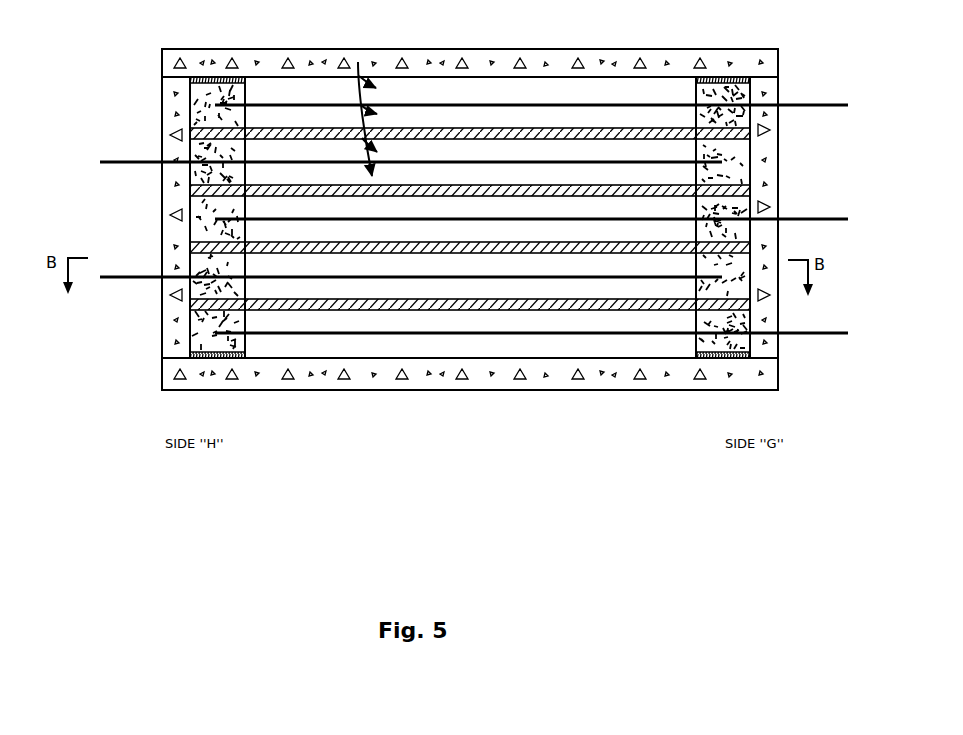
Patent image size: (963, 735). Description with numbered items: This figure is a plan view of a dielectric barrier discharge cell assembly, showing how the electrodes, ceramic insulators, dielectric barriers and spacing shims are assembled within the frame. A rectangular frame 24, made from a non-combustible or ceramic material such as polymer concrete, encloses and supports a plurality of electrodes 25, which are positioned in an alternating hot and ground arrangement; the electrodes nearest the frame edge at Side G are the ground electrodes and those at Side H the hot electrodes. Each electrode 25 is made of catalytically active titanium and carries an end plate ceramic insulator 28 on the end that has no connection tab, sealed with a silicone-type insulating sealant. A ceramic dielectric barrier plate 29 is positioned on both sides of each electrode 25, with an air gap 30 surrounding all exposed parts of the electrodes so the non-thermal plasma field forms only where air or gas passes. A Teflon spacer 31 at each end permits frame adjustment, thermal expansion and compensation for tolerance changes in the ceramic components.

The rectangular frame 24 is at (202, 56).
The electrode 25 is at (100, 158).
The end plate ceramic insulator 28 is at (212, 341).
The dielectric barrier plate 29 is at (233, 132).
The air gap 30 is at (358, 62).
The Teflon spacer 31 is at (693, 80).